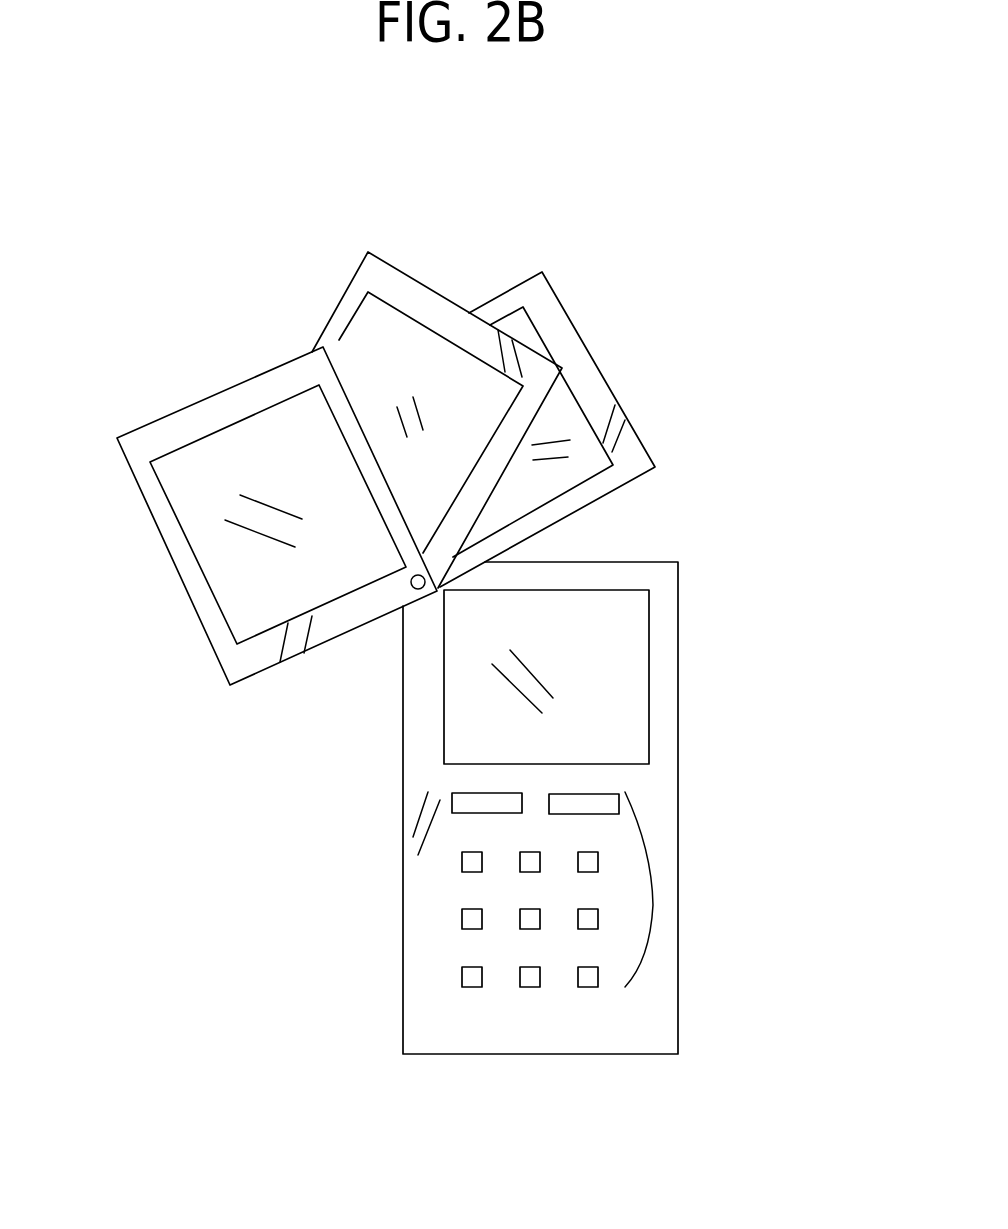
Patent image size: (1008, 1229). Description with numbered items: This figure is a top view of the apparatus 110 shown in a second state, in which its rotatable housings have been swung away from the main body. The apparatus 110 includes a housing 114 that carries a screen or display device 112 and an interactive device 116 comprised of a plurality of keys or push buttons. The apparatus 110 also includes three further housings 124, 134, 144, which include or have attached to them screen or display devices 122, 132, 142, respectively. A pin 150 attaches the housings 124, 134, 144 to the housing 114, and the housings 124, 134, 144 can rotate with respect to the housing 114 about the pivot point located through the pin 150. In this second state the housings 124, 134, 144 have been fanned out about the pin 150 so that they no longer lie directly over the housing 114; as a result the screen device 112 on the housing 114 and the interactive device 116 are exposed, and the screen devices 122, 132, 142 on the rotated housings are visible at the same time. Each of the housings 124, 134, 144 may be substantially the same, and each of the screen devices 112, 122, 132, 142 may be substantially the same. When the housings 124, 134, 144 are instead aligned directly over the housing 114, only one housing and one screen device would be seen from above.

The apparatus 110 is at (728, 480).
The screen or display device 112 is at (624, 656).
The housing 114 is at (658, 793).
The interactive device 116 is at (660, 905).
The screen or display device 122 is at (237, 437).
The housing 124 is at (143, 440).
The screen or display device 132 is at (397, 330).
The housing 134 is at (350, 300).
The screen or display device 142 is at (558, 315).
The housing 144 is at (600, 360).
The pin 150 is at (412, 590).